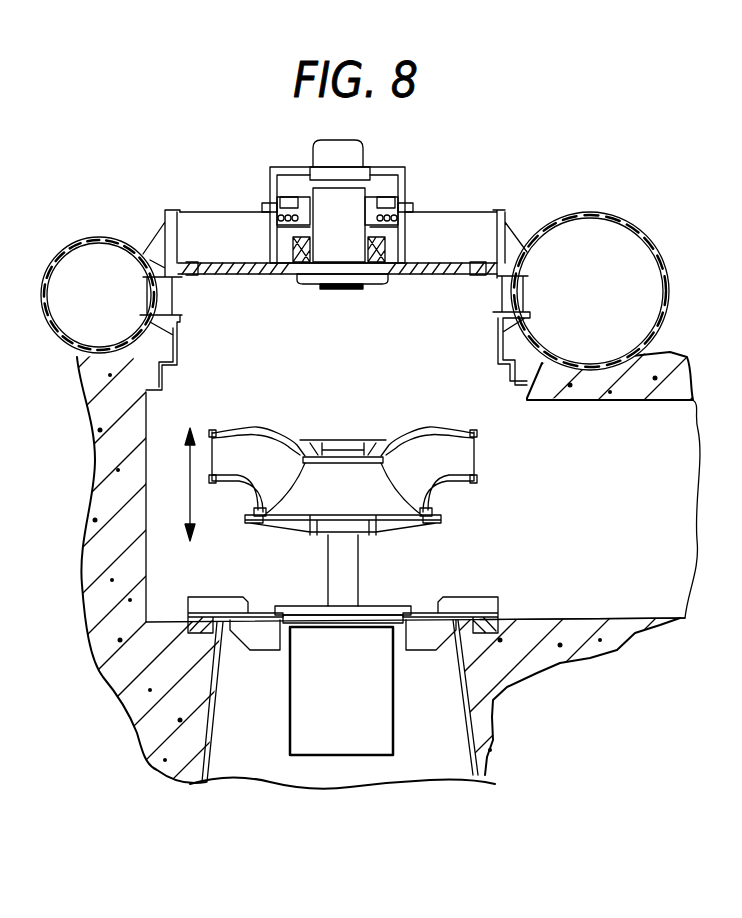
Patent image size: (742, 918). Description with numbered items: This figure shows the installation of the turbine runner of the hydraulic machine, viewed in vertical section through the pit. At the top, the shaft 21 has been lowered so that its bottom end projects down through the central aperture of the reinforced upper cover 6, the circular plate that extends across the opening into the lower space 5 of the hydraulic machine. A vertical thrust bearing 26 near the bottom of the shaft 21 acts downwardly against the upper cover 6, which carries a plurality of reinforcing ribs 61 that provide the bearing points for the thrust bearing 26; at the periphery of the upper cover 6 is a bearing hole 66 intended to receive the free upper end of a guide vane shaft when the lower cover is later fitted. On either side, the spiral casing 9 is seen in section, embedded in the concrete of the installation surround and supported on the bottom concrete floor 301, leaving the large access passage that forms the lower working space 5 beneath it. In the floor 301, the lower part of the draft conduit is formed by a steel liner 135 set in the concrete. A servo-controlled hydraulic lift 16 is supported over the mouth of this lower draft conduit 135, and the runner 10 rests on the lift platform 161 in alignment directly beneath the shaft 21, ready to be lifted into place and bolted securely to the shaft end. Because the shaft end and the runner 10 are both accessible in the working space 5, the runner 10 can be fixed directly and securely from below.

The lower space 5 is at (690, 511).
The upper cover 6 is at (263, 273).
The spiral casing 9 is at (663, 262).
The runner 10 is at (462, 456).
The servo-controlled hydraulic lift 16 is at (381, 695).
The shaft 21 is at (345, 142).
The vertical thrust bearing 26 is at (388, 203).
The reinforcing ribs 61 is at (222, 192).
The bearing hole 66 is at (483, 277).
The lower part of the draft conduit 135 is at (476, 712).
The lift platform 161 is at (430, 520).
The concrete floor 301 is at (629, 616).